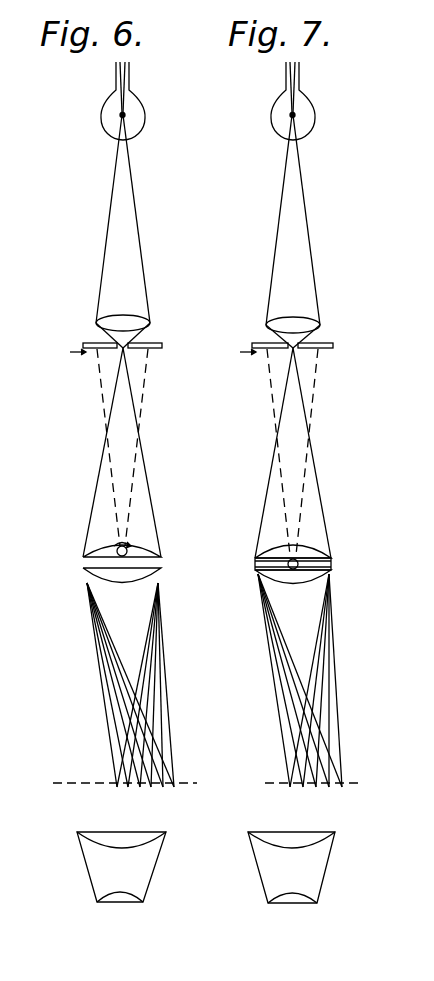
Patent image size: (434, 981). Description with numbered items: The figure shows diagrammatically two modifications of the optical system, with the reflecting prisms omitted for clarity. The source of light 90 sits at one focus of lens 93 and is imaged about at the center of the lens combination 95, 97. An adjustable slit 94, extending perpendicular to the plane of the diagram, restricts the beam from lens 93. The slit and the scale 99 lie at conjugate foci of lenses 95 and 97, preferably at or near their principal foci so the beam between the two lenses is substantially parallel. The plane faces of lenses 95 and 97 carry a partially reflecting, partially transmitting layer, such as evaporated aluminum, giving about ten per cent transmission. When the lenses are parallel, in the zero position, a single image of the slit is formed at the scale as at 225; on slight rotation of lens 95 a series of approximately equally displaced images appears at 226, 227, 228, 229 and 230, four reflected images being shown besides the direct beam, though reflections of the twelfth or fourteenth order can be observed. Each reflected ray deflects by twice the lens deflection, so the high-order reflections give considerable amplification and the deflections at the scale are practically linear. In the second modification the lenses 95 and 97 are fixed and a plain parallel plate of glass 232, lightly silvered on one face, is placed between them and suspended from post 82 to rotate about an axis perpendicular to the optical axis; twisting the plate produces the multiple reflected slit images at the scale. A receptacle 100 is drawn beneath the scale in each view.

In FIG. 6, the source of light 90 is at (128, 113).
In FIG. 6, the lens 93 is at (130, 325).
In FIG. 6, the adjustable slit 94 is at (160, 343).
In FIG. 6, the post 82 is at (128, 547).
In FIG. 7, the post 82 is at (287, 568).
In FIG. 6, the lens 95 is at (140, 549).
In FIG. 7, the lens 95 is at (322, 553).
In FIG. 6, the lens 97 is at (150, 572).
In FIG. 7, the lens 97 is at (325, 578).
In FIG. 6, the scale 99 is at (56, 786).
In FIG. 7, the scale 99 is at (278, 786).
In FIG. 6, the receptacle 100 is at (148, 877).
In FIG. 7, the receptacle 100 is at (262, 872).
In FIG. 6, the single image of the slit 225 is at (117, 785).
In FIG. 6, the displaced image of the slit 226 is at (129, 788).
In FIG. 6, the displaced image of the slit 227 is at (142, 786).
In FIG. 6, the displaced image of the slit 228 is at (154, 786).
In FIG. 6, the displaced image of the slit 229 is at (166, 786).
In FIG. 6, the displaced image of the slit 230 is at (176, 783).
In FIG. 7, the plain parallel plate of glass 232 is at (333, 564).